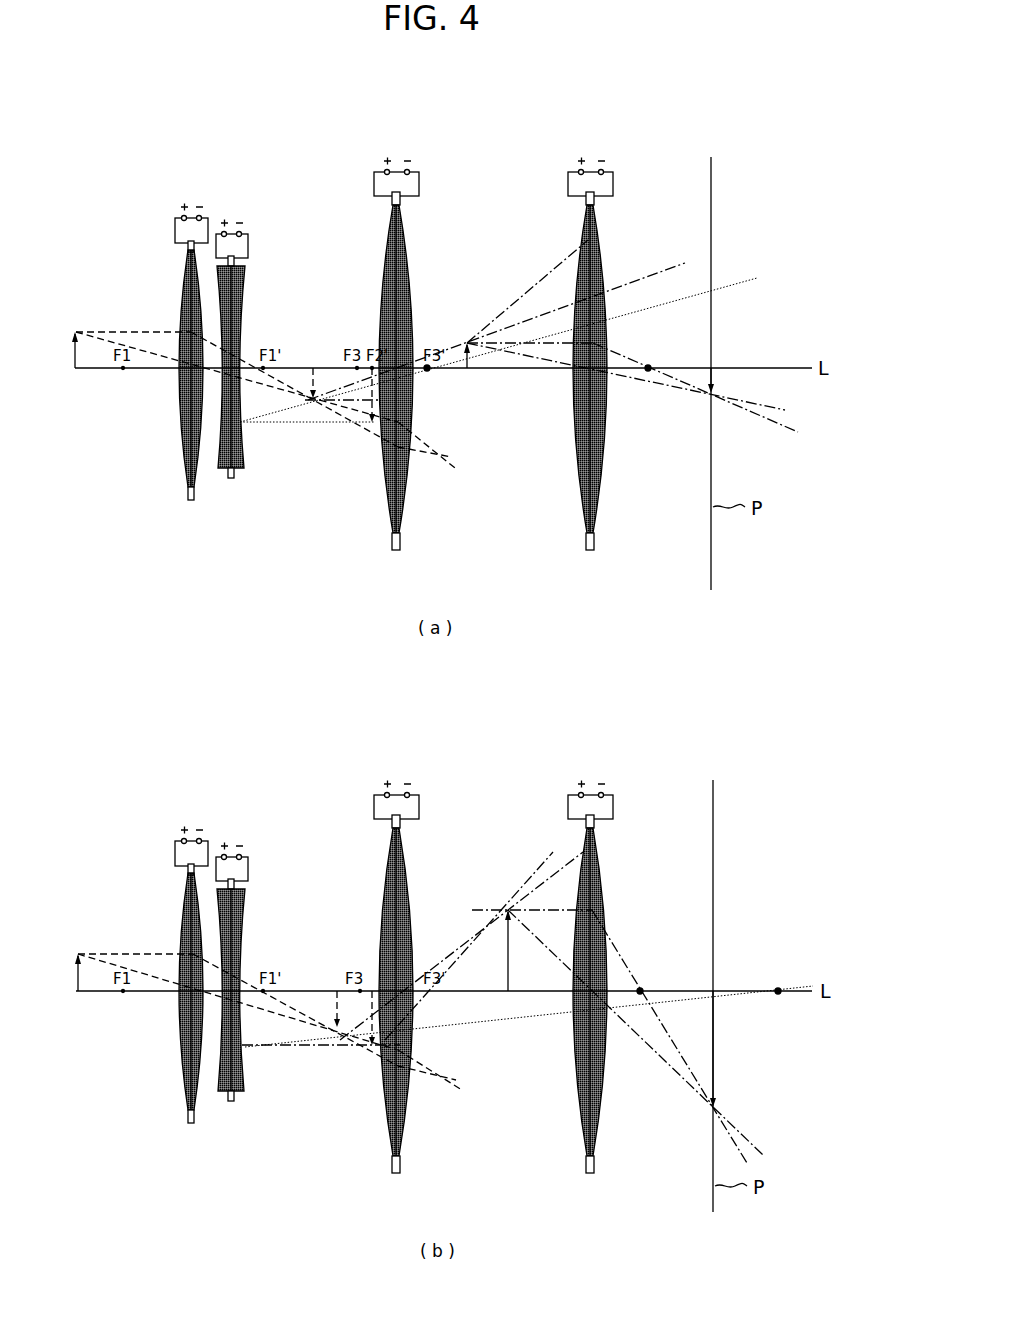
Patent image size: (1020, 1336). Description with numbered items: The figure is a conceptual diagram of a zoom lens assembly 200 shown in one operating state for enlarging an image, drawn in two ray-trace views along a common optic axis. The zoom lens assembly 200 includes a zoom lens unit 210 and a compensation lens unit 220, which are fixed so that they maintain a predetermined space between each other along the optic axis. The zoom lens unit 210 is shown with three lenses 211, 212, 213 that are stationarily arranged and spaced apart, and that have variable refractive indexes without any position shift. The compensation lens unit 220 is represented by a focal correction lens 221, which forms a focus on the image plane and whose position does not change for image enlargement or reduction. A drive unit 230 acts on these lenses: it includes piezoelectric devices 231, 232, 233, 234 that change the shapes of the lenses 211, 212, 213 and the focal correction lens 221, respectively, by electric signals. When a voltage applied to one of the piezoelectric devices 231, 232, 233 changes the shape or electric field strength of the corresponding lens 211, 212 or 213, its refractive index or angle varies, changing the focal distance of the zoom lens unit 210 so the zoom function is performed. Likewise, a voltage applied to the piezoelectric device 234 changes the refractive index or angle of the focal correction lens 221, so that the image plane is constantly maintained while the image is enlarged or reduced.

The zoom lens assembly 200 is at (91, 128).
The zoom lens unit 210 is at (348, 605).
The lens 211 is at (183, 487).
The lens 212 is at (247, 470).
The lens 213 is at (388, 527).
The compensation lens unit 220 is at (552, 146).
The focal correction lens 221 is at (608, 243).
The drive unit 230 is at (168, 186).
The piezoelectric device 231 is at (188, 248).
The piezoelectric device 232 is at (240, 262).
The piezoelectric device 233 is at (404, 196).
The piezoelectric device 234 is at (598, 196).